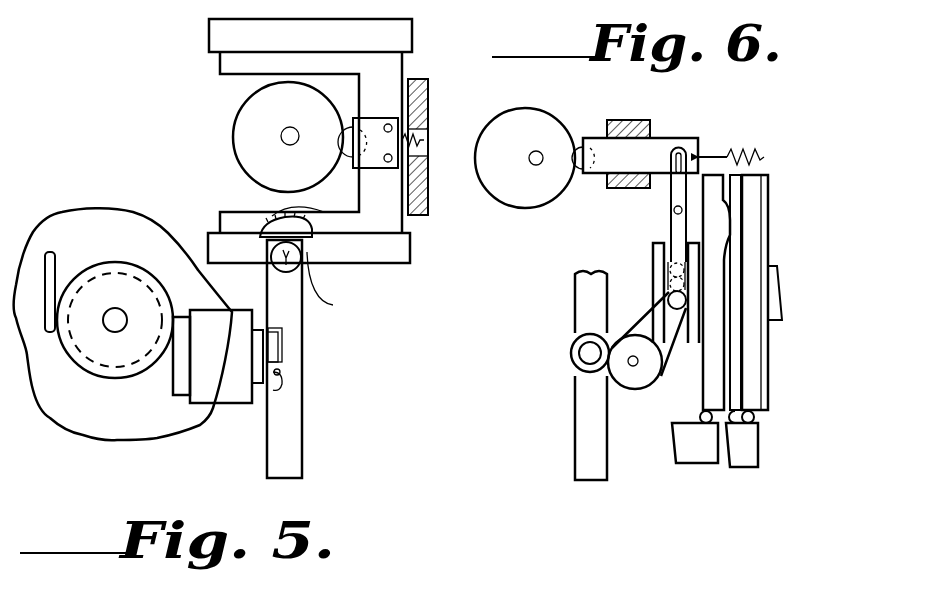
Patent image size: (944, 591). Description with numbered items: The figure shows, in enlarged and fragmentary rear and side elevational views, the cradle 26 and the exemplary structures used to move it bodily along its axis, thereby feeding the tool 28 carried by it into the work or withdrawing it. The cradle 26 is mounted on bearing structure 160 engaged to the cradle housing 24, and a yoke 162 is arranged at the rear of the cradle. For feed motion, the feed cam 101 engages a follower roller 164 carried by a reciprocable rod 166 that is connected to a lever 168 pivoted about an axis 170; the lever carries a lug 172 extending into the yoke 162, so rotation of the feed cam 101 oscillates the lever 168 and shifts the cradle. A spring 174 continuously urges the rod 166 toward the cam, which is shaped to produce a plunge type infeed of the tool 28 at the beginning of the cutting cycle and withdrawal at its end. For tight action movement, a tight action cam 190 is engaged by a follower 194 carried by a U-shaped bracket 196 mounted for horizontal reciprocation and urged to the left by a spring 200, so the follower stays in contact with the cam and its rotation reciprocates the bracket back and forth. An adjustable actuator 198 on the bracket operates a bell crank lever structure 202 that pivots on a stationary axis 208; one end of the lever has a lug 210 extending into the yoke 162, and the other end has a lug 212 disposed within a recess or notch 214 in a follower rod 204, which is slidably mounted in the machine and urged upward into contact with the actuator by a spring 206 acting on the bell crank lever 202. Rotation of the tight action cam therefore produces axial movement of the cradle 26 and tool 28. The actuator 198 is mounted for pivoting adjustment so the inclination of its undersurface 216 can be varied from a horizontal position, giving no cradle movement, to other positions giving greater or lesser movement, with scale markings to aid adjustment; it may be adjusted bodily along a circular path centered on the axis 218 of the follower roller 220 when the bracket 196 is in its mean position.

In FIG. 6, the cradle housing 24 is at (743, 470).
In FIG. 5, the cradle 26 is at (107, 440).
In FIG. 6, the cradle 26 is at (760, 385).
In FIG. 6, the tool 28 is at (780, 312).
In FIG. 6, the feed cam 101 is at (521, 88).
In FIG. 6, the bearing structure 160 is at (757, 417).
In FIG. 5, the yoke 162 is at (115, 383).
In FIG. 6, the yoke 162 is at (658, 237).
In FIG. 6, the follower roller 164 is at (575, 143).
In FIG. 6, the reciprocable rod 166 is at (663, 137).
In FIG. 5, the lever 168 is at (46, 262).
In FIG. 6, the lever 168 is at (670, 185).
In FIG. 6, the pivotal axis 170 is at (682, 212).
In FIG. 5, the lug 172 is at (82, 272).
In FIG. 6, the lug 172 is at (690, 277).
In FIG. 6, the spring 174 is at (740, 148).
In FIG. 5, the tight action cam 190 is at (244, 98).
In FIG. 5, the follower 194 is at (343, 122).
In FIG. 5, the U-shaped bracket 196 is at (222, 57).
In FIG. 5, the adjustable actuator 198 is at (348, 232).
In FIG. 5, the spring 200 is at (428, 140).
In FIG. 5, the bell crank lever structure 202 is at (230, 407).
In FIG. 6, the bell crank lever structure 202 is at (630, 388).
In FIG. 5, the follower rod 204 is at (302, 447).
In FIG. 6, the follower rod 204 is at (577, 460).
In FIG. 6, the spring 206 is at (647, 313).
In FIG. 6, the stationary axis 208 is at (638, 365).
In FIG. 5, the lug 210 is at (115, 320).
In FIG. 6, the lug 210 is at (686, 297).
In FIG. 5, the lug 212 is at (282, 363).
In FIG. 6, the lug 212 is at (571, 353).
In FIG. 5, the recess or notch 214 is at (280, 388).
In FIG. 5, the undersurface 216 is at (343, 288).
In FIG. 5, the axis 218 is at (277, 274).
In FIG. 5, the follower roller 220 is at (270, 240).